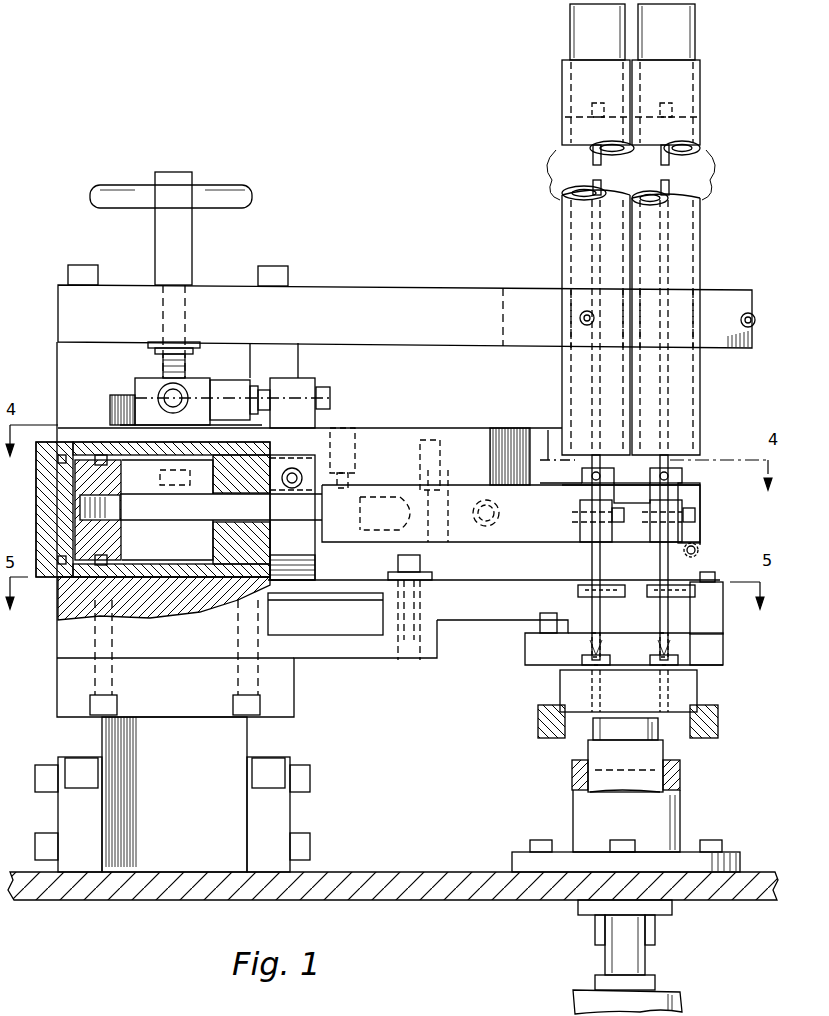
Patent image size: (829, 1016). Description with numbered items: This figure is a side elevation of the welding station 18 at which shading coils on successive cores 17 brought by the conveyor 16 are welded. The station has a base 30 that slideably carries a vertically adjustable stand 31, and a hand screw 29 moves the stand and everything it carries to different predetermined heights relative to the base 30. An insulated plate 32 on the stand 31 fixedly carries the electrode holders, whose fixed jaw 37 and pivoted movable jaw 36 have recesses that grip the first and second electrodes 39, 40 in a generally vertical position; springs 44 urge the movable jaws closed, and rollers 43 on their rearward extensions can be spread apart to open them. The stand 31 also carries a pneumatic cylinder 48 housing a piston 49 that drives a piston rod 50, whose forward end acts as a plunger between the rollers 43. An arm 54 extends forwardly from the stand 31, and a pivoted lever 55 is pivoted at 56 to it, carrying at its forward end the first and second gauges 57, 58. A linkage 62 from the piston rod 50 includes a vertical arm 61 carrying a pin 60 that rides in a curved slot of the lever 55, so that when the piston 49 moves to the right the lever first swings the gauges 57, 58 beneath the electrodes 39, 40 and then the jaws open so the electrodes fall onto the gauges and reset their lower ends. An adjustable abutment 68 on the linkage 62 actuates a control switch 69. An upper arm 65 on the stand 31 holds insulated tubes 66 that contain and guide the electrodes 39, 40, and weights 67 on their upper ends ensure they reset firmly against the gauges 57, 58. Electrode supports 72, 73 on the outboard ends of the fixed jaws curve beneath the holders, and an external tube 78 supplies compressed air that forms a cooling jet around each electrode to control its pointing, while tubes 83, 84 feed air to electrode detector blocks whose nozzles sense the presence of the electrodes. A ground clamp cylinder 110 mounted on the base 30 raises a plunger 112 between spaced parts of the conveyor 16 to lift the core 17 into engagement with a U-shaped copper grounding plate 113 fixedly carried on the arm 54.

The welding station 18 is at (385, 248).
The hand screw 29 is at (192, 247).
The upper arm 65 is at (446, 292).
The weights 67 is at (572, 28).
The insulated tubes 66 is at (556, 162).
The second electrode 40 is at (600, 152).
The first electrode 39 is at (670, 182).
The control switch 69 is at (150, 384).
The adjustable abutment 68 is at (254, 388).
The linkage 62 is at (312, 420).
The insulated plate 32 is at (430, 436).
The rollers 43 is at (400, 497).
The springs 44 is at (482, 500).
The pneumatic cylinder 48 is at (92, 442).
The piston 49 is at (120, 550).
The piston rod 50 is at (150, 522).
The vertical arm 61 is at (315, 548).
The pin 60 is at (315, 569).
The pivot 56 is at (422, 566).
The pivoted lever 55 is at (485, 622).
The arm 54 is at (374, 658).
The stand 31 is at (294, 700).
The base 30 is at (436, 872).
The tube 84 is at (580, 474).
The tube 83 is at (676, 477).
The electrode support 73 is at (626, 500).
The electrode support 72 is at (700, 495).
The fixed jaw 37 is at (615, 536).
The movable jaw 36 is at (686, 536).
The external tube 78 is at (700, 551).
The second gauge 58 is at (612, 655).
The first gauge 57 is at (696, 660).
The grounding plate 113 is at (722, 654).
The core 17 is at (697, 686).
The conveyor 16 is at (718, 725).
The plunger 112 is at (592, 728).
The ground clamp cylinder 110 is at (580, 995).